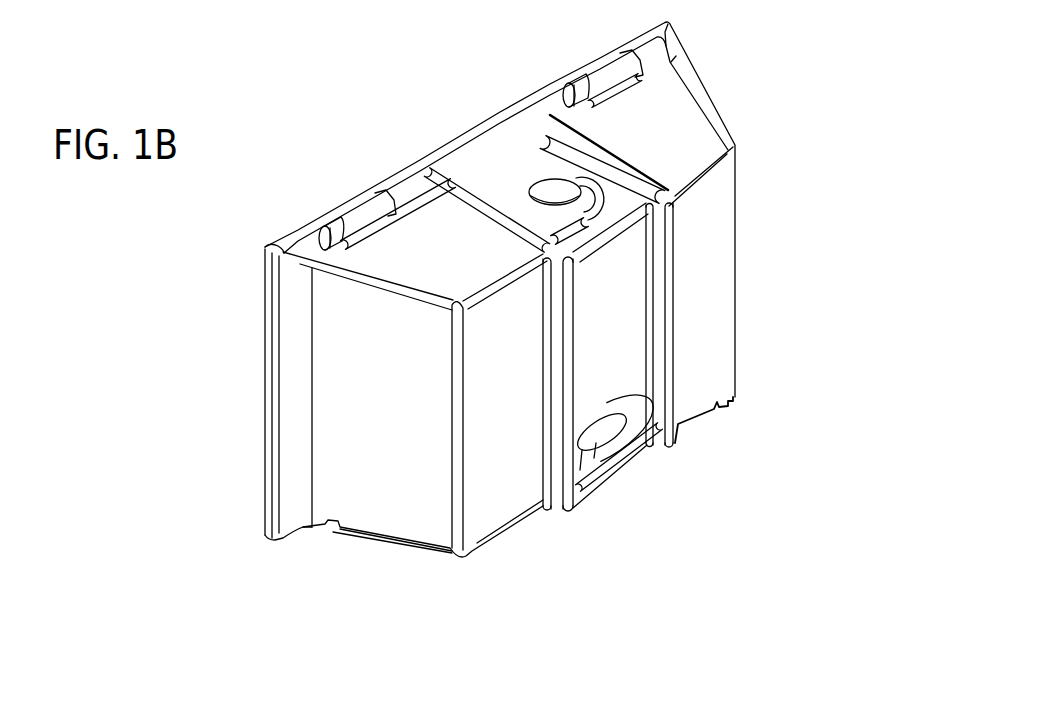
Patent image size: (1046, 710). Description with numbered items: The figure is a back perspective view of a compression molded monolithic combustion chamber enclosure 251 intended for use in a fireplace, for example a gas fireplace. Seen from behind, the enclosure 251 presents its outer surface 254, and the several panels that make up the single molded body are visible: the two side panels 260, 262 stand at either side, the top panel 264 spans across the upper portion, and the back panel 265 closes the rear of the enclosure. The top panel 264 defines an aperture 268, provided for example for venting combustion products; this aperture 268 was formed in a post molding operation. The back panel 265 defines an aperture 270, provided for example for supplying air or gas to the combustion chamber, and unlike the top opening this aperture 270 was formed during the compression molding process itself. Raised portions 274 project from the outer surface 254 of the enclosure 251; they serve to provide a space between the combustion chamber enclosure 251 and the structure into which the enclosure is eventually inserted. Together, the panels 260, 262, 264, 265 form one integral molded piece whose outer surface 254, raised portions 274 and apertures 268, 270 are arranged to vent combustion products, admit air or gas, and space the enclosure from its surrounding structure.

The combustion chamber enclosure 251 is at (527, 311).
The side panel 262 is at (713, 125).
The top panel 264 is at (410, 250).
The side panel 260 is at (383, 487).
The outer surface 254 is at (431, 502).
The raised portions 274 is at (673, 207).
The aperture 270 is at (596, 442).
The aperture 268 is at (553, 197).
The back panel 265 is at (707, 340).